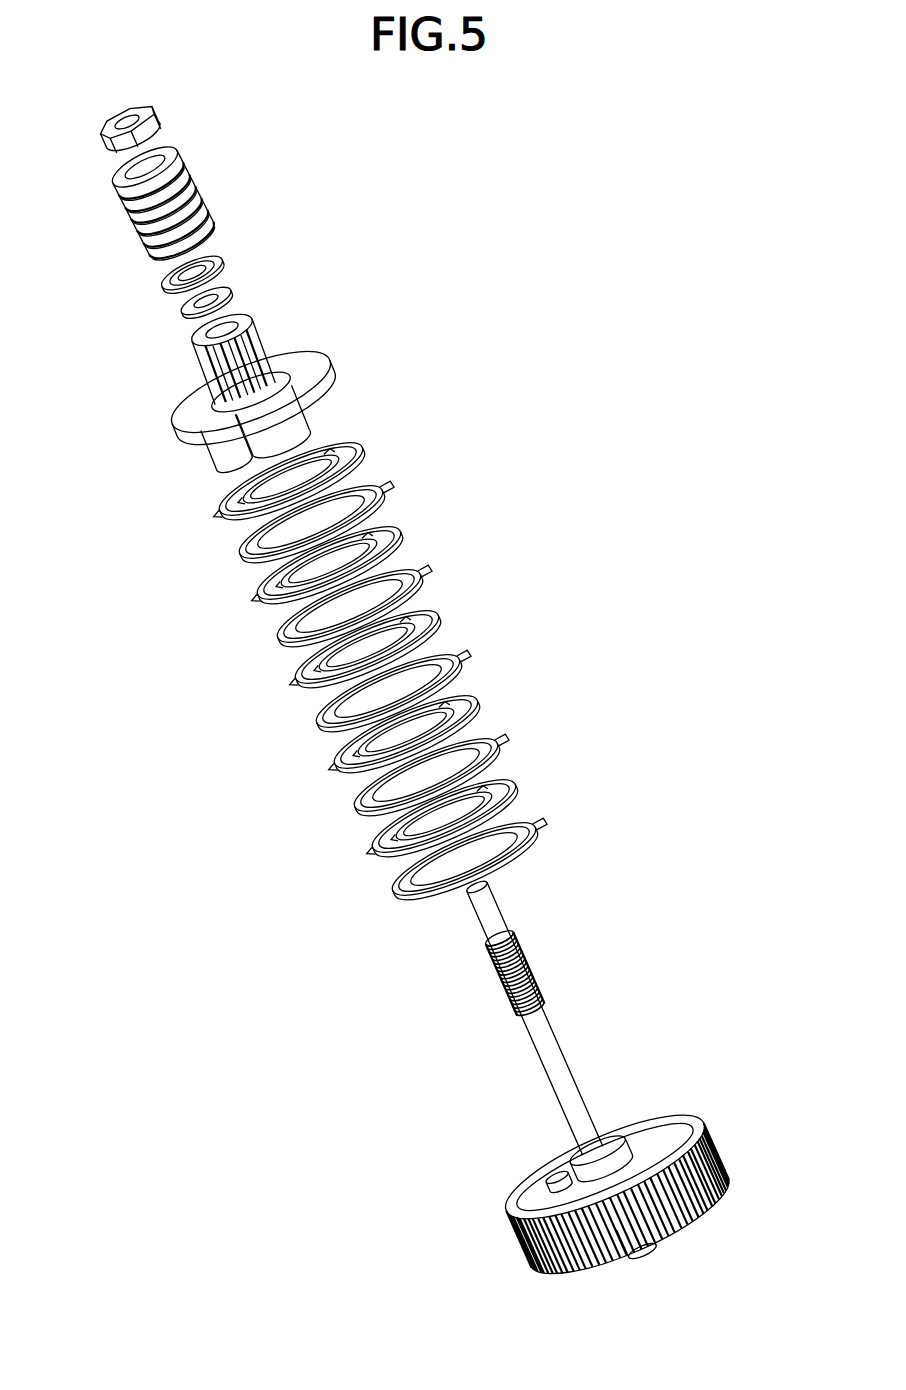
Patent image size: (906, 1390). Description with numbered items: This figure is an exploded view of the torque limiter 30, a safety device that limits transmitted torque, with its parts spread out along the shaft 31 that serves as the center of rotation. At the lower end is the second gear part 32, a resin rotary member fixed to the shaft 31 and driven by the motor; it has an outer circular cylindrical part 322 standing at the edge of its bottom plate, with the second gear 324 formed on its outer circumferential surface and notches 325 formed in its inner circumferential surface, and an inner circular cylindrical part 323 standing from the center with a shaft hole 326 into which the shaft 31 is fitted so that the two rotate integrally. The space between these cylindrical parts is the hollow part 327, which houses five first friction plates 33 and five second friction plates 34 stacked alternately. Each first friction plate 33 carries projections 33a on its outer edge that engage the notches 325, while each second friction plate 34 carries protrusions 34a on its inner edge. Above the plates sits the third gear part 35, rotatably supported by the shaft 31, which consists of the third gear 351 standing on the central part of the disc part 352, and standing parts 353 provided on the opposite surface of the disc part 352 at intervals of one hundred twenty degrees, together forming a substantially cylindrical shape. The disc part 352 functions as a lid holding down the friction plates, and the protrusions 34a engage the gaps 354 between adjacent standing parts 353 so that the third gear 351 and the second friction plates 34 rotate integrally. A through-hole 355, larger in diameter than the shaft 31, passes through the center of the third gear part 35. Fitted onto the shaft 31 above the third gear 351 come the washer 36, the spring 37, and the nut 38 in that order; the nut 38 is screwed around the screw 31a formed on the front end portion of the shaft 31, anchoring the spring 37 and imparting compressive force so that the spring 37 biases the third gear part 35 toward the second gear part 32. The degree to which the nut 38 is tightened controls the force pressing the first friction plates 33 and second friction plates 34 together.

The torque limiter 30 is at (678, 471).
The shaft 31 is at (581, 997).
The screw 31a is at (530, 955).
The second gear part 32 is at (606, 1168).
The outer circular cylindrical part 322 is at (520, 1203).
The inner circular cylindrical part 323 is at (601, 1158).
The second gear 324 is at (638, 1240).
The notches 325 is at (700, 1108).
The shaft hole 326 is at (558, 1182).
The hollow part 327 is at (605, 1167).
The first friction plates 33 is at (257, 565).
The projections 33a is at (391, 486).
The second friction plates 34 is at (364, 447).
The protrusions 34a is at (238, 523).
The third gear part 35 is at (240, 396).
The third gear 351 is at (205, 360).
The disc part 352 is at (218, 428).
The standing parts 353 is at (310, 412).
The gaps 354 is at (218, 468).
The through-hole 355 is at (245, 312).
The washer 36 is at (198, 316).
The spring 37 is at (200, 205).
The nut 38 is at (155, 118).